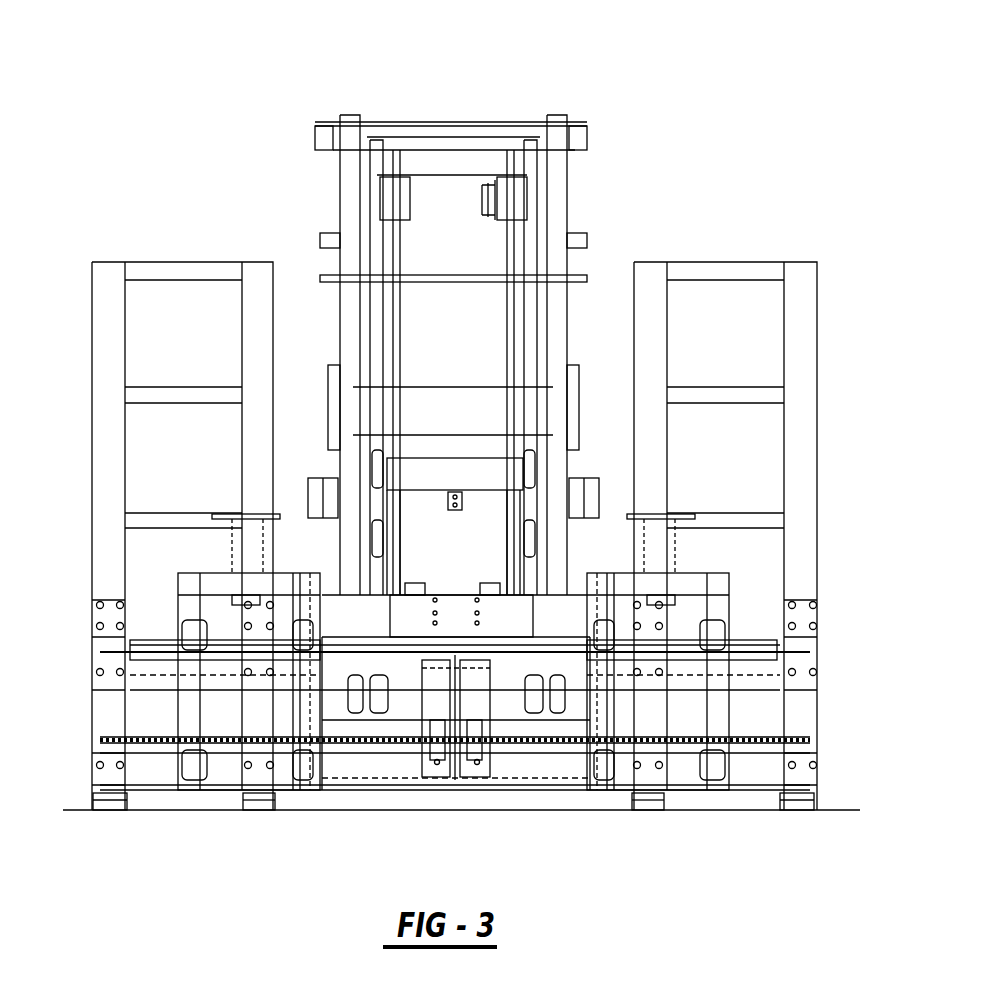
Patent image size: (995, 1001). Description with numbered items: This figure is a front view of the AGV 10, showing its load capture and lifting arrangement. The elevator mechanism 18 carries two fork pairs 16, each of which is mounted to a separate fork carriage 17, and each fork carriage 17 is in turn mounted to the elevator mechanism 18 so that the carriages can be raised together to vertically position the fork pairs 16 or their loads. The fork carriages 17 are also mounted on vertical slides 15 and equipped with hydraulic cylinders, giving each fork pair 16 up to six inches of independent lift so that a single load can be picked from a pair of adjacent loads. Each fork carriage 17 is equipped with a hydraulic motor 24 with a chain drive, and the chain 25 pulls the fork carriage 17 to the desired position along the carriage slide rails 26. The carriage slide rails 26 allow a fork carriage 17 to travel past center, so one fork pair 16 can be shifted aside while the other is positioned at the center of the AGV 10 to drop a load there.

The AGV 10 is at (210, 96).
The vertical slides 15 is at (193, 572).
The fork pairs 16 is at (105, 810).
The fork carriage 17 is at (800, 573).
The elevator mechanism 18 is at (563, 167).
The hydraulic motor 24 is at (437, 705).
The chain 25 is at (762, 730).
The carriage slide rails 26 is at (93, 757).